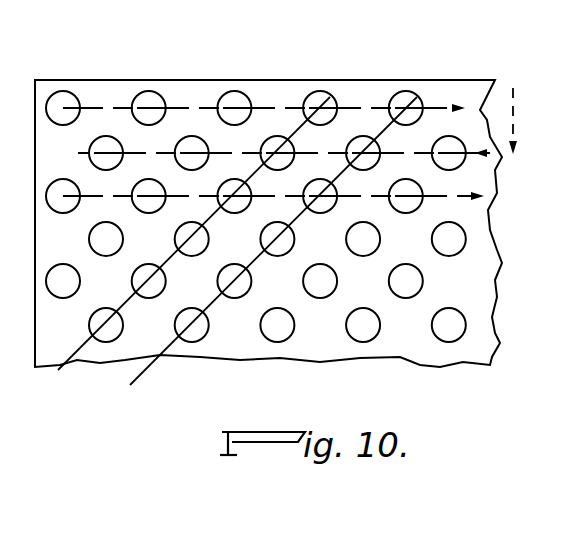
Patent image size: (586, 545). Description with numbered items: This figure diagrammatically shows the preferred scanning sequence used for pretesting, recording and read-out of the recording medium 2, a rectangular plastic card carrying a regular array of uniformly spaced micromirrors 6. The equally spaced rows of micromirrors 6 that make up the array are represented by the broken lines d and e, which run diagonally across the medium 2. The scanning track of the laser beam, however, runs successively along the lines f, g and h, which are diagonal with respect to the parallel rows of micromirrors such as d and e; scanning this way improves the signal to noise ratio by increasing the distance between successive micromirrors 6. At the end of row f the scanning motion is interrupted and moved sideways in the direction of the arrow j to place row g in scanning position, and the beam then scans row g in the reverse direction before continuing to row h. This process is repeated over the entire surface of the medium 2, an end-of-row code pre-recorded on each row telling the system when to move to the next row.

The recording medium 2 is at (118, 78).
The micromirrors 6 is at (66, 100).
The scanning line f is at (270, 107).
The scanning line g is at (312, 148).
The scanning line h is at (270, 195).
The row line d is at (78, 352).
The row line e is at (167, 349).
The sideways direction arrow j is at (513, 117).